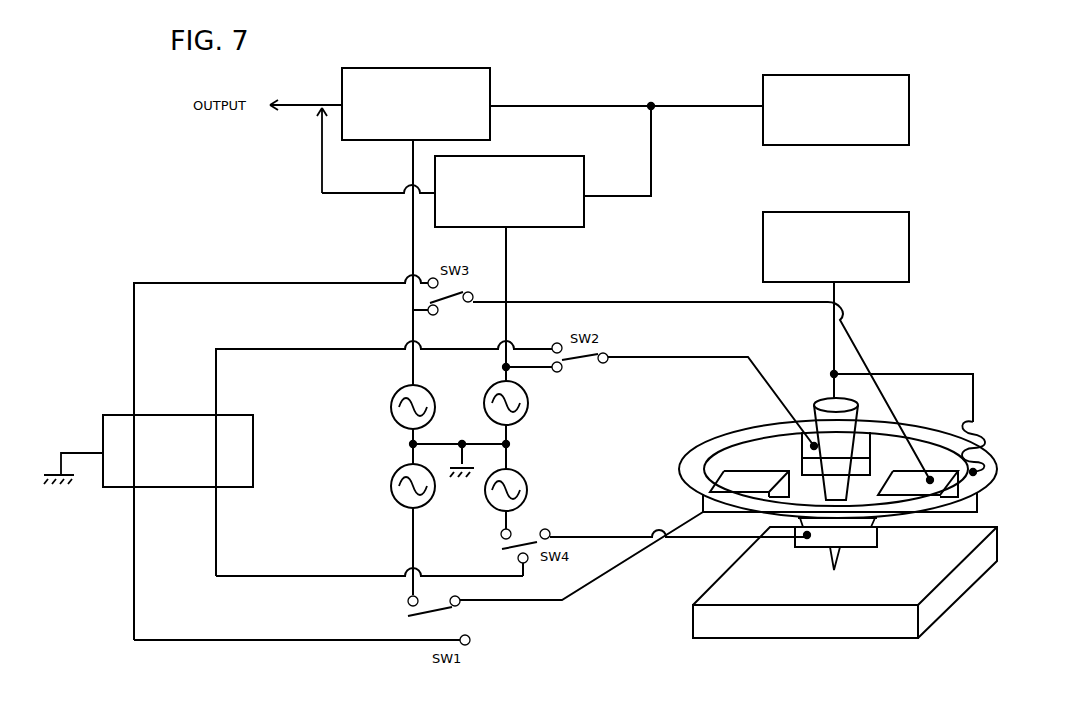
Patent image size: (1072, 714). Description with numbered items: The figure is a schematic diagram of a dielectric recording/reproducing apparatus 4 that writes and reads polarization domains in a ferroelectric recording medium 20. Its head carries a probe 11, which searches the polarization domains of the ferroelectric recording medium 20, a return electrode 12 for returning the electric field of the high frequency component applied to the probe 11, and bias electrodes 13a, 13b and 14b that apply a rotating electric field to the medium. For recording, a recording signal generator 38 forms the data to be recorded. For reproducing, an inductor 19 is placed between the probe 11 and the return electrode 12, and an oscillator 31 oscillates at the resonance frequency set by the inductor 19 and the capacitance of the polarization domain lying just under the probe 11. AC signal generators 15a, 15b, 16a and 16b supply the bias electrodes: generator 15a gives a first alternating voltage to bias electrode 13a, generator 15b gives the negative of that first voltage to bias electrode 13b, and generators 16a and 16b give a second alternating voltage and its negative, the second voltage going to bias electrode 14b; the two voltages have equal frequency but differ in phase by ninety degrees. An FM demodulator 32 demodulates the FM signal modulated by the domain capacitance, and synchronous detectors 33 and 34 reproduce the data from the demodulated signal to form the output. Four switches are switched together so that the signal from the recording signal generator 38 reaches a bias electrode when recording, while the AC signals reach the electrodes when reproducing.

The dielectric recording/reproducing apparatus 4 is at (629, 603).
The probe 11 is at (828, 380).
The return electrode 12 is at (712, 448).
The bias electrode 13a is at (702, 502).
The bias electrode 13b is at (978, 500).
The bias electrode 14b is at (802, 457).
The AC signal generator 15a is at (528, 403).
The AC signal generator 15b is at (527, 490).
The AC signal generator 16a is at (390, 408).
The AC signal generator 16b is at (390, 488).
The inductor 19 is at (988, 428).
The ferroelectric recording medium 20 is at (997, 543).
The oscillator 31 is at (910, 245).
The FM demodulator 32 is at (910, 108).
The synchronous detector 33 is at (578, 227).
The synchronous detector 34 is at (470, 68).
The recording signal generator 38 is at (222, 415).